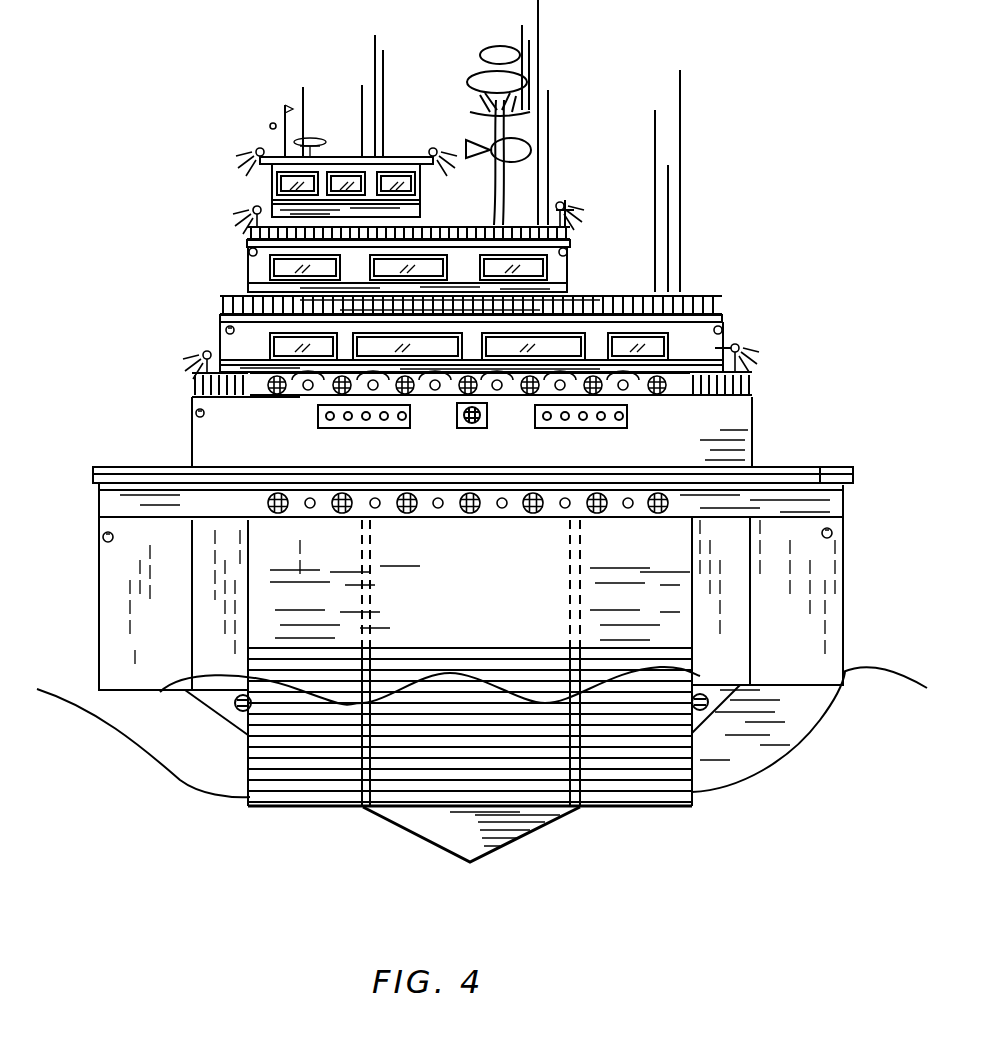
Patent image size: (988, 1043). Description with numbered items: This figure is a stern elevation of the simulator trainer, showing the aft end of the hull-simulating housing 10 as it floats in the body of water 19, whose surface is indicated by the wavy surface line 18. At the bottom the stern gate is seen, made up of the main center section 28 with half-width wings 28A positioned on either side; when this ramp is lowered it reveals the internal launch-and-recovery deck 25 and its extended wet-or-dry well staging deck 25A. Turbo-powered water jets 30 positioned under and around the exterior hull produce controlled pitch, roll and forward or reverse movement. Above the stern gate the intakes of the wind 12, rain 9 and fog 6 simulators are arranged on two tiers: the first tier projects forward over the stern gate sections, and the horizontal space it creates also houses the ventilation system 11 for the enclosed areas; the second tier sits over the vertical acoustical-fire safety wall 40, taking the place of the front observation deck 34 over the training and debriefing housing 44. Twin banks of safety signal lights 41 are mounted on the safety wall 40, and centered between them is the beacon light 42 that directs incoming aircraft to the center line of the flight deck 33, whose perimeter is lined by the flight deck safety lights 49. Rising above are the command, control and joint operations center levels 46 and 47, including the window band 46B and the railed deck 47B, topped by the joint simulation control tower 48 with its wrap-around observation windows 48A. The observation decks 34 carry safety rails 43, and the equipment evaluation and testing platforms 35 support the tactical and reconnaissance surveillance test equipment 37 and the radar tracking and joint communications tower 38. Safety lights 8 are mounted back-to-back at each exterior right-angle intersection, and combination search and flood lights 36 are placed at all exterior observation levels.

The fog simulator 6 is at (430, 398).
The safety lights 8 is at (273, 126).
The rain simulator 9 is at (308, 390).
The housing 10 is at (162, 773).
The ventilation system 11 is at (137, 502).
The wind simulator 12 is at (275, 392).
The wavy surface line 18 is at (883, 673).
The body of water 19 is at (213, 913).
The launch-and-recovery landing deck 25 is at (460, 638).
The extended launch-and-recovery deck 25A is at (427, 595).
The stern gate main center section 28 is at (430, 808).
The half-width wings 28A is at (340, 806).
The turbo-powered water jet 30 is at (237, 717).
The flight deck 33 is at (770, 467).
The observation deck 34 is at (533, 220).
The equipment evaluation and testing platform 35 is at (528, 226).
The search/flood lights 36 is at (432, 150).
The tactical and reconnaissance surveillance test equipment 37 is at (680, 181).
The joint communications tower 38 is at (502, 42).
The acoustical-fire safety wall 40 is at (707, 433).
The safety signal lights 41 is at (340, 428).
The beacon light for flight deck center line 42 is at (480, 428).
The safety rails 43 is at (220, 307).
The training and debriefing areas 44 is at (192, 448).
The Command, Control, Joint Operations Center 46 is at (250, 362).
The deck windows 46B is at (280, 347).
The Command, Control, Joint Operations Center 47 is at (293, 290).
The third deck railing 47B is at (293, 262).
The Joint Simulation Control Tower 48 is at (258, 215).
The wrap-around observation windows 48A is at (340, 167).
The flight deck safety lights 49 is at (93, 470).